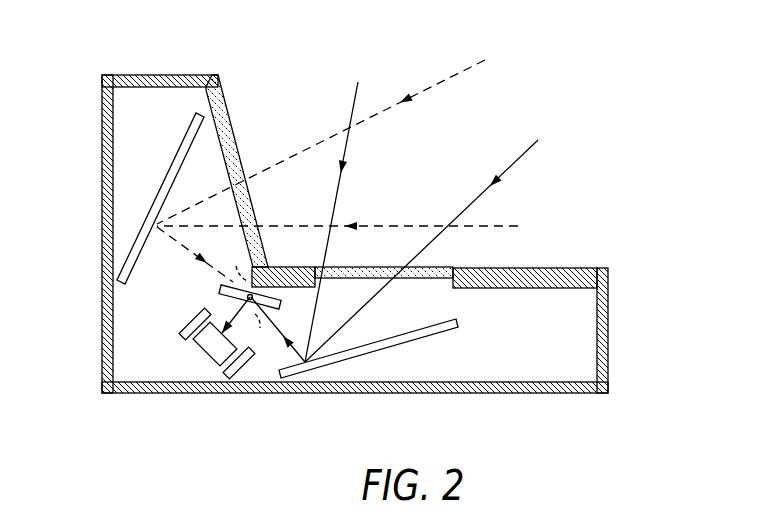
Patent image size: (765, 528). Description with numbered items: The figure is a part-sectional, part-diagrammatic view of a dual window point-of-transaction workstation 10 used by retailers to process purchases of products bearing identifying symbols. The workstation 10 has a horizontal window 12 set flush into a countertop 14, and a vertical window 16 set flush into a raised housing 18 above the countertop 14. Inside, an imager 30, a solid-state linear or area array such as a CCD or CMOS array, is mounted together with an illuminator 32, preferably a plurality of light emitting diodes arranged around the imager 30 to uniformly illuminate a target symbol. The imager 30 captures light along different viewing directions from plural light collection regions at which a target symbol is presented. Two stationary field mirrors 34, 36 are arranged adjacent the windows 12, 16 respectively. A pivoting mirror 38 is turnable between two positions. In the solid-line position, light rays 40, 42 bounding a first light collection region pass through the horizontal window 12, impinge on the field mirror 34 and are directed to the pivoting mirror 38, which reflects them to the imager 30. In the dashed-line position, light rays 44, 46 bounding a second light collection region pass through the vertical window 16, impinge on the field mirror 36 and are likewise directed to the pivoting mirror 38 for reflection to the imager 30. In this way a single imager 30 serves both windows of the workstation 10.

The point-of-transaction workstation 10 is at (611, 198).
The horizontal window 12 is at (446, 268).
The countertop 14 is at (545, 268).
The vertical window 16 is at (224, 110).
The raised housing 18 is at (109, 75).
The imager 30 is at (197, 357).
The illuminator 32 is at (185, 321).
The field mirror 34 is at (438, 330).
The field mirror 36 is at (171, 163).
The pivoting mirror 38 is at (277, 306).
The light ray 40 is at (516, 162).
The light ray 42 is at (348, 138).
The light ray 44 is at (435, 88).
The light ray 46 is at (397, 215).